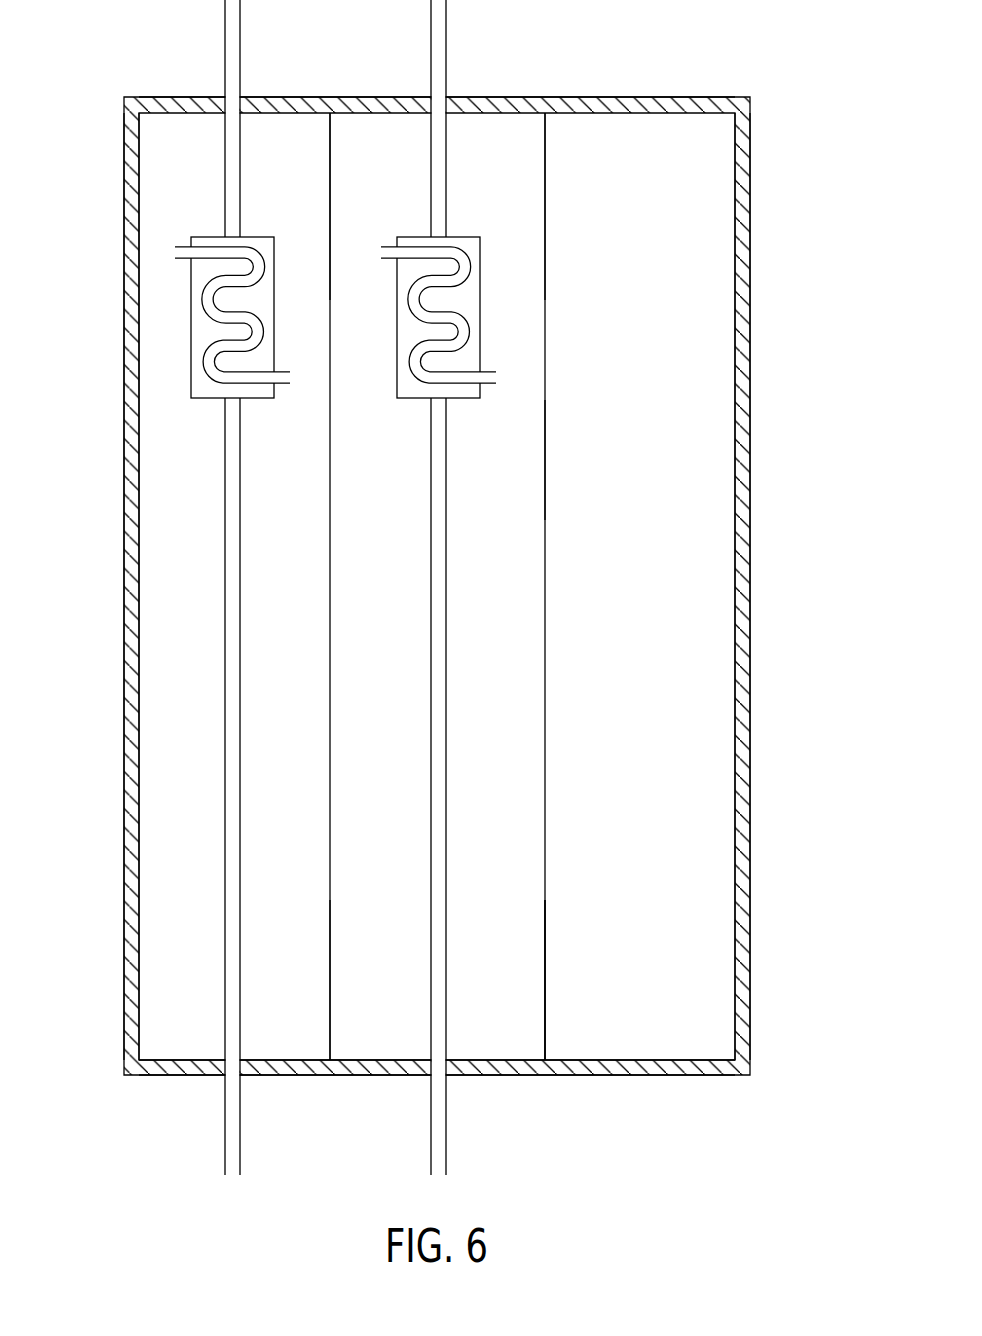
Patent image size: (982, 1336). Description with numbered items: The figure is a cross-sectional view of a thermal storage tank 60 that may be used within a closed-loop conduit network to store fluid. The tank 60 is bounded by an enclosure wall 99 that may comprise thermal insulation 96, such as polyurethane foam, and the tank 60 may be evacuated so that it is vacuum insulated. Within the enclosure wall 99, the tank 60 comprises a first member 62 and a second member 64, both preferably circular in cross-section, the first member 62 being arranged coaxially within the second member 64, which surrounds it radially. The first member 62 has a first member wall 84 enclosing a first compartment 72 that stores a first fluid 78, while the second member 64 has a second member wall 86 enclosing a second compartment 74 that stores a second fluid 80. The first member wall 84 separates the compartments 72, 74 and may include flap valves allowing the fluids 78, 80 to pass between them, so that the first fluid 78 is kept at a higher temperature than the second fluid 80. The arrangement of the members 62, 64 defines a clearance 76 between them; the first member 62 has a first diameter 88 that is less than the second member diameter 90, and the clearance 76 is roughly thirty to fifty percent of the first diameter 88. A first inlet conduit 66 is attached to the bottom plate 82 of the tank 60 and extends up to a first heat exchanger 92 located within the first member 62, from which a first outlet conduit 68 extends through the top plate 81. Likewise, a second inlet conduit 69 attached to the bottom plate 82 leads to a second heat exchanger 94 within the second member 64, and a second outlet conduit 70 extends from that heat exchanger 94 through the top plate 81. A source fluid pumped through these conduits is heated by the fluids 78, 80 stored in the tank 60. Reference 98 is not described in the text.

The thermal storage tank 60 is at (737, 43).
The first member 62 is at (393, 128).
The second member 64 is at (180, 128).
The first inlet conduit 66 is at (444, 1150).
The first outlet conduit 68 is at (440, 45).
The second inlet conduit 69 is at (232, 1130).
The second outlet conduit 70 is at (233, 35).
The first compartment 72 is at (512, 1042).
The second compartment 74 is at (700, 1033).
The clearance 76 is at (613, 128).
The first fluid 78 is at (365, 1035).
The second fluid 80 is at (165, 1037).
The top plate 81 is at (677, 98).
The bottom plate 82 is at (660, 1075).
The first member wall 84 is at (546, 165).
The second member wall 86 is at (740, 223).
The first diameter 88 is at (548, 455).
The second member diameter 90 is at (737, 477).
The first heat exchanger 92 is at (462, 300).
The second heat exchanger 94 is at (207, 273).
The thermal insulation 96 is at (132, 458).
The left outer wall 98 is at (127, 377).
The enclosure wall 99 is at (127, 587).